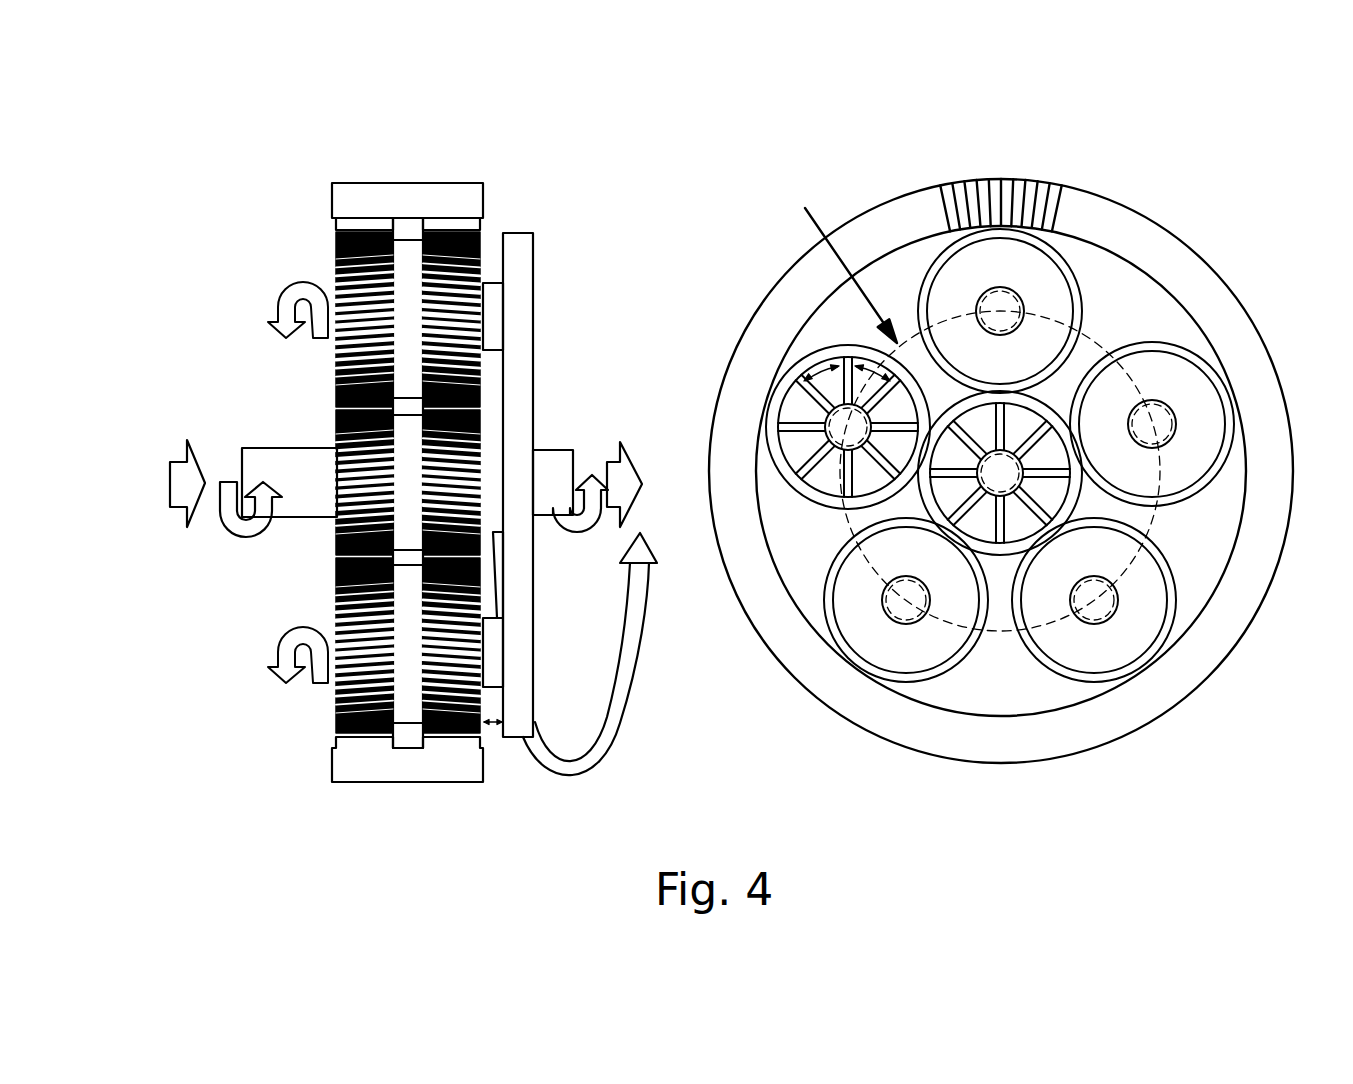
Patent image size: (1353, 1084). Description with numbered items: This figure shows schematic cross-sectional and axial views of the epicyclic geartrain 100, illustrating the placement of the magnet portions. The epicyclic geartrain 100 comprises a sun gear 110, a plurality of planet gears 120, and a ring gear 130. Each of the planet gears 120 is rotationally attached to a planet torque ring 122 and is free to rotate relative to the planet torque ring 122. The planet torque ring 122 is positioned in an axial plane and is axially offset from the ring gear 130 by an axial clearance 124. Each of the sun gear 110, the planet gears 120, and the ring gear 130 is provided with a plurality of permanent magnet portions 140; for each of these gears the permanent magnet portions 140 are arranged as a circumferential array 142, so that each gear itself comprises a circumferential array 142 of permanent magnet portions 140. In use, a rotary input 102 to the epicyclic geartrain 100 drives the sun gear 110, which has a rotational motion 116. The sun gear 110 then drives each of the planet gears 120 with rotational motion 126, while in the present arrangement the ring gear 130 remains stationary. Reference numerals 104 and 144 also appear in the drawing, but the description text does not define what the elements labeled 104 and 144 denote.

The epicyclic geartrain 100 is at (213, 183).
The rotary input 102 is at (290, 467).
The output shaft 104 is at (553, 448).
The sun gear 110 is at (458, 492).
The rotational motion 116 is at (233, 547).
The planet gears 120 is at (390, 450).
The planet torque ring 122 is at (518, 300).
The axial clearance 124 is at (488, 728).
The rotational motion 126 is at (268, 662).
The ring gear 130 is at (411, 181).
The permanent magnet portions 140 is at (873, 359).
The circumferential array 142 is at (802, 412).
The angular pitch 144 is at (862, 368).